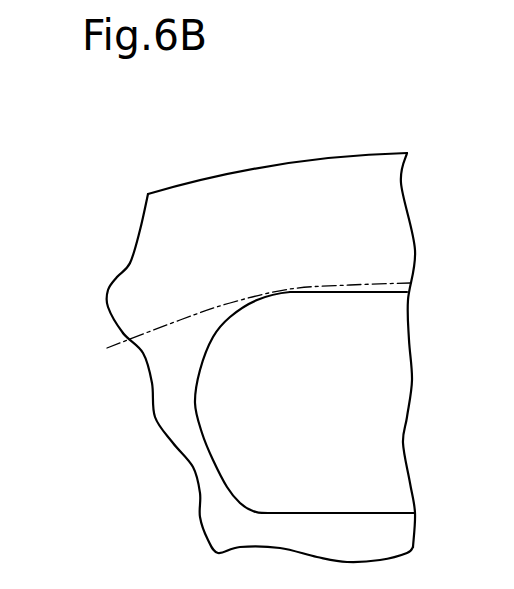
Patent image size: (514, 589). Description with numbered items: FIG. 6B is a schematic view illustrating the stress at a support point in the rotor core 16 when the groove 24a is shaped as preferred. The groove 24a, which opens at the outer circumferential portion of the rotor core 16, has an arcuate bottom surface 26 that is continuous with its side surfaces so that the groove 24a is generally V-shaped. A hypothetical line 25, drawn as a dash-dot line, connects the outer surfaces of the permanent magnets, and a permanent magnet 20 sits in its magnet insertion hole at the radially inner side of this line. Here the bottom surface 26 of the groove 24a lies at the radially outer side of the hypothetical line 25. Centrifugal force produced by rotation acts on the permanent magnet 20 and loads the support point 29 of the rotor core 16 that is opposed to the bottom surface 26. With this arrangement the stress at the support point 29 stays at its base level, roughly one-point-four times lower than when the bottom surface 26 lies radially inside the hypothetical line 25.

The rotor core 16 is at (367, 153).
The groove 24a is at (122, 232).
The bottom surface 26 is at (118, 278).
The hypothetical line 25 is at (113, 345).
The support point 29 is at (214, 334).
The permanent magnet 20 is at (350, 503).